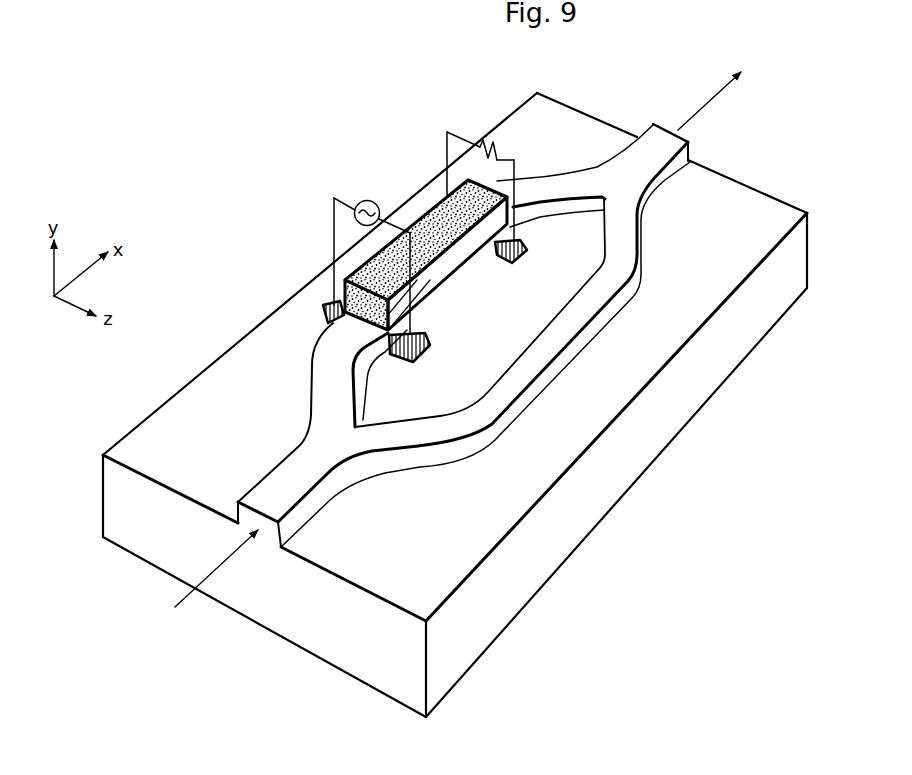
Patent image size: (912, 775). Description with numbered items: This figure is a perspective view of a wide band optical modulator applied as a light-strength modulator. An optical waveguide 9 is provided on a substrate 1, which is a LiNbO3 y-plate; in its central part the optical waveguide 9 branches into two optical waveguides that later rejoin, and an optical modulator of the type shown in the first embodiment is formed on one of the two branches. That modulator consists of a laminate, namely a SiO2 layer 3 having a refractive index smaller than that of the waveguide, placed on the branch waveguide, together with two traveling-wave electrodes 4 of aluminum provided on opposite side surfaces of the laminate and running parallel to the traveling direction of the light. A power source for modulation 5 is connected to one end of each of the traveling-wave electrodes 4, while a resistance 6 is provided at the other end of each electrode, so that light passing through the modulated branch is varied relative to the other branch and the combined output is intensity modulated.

The substrate 1 is at (567, 545).
The SiO2 layer 3 is at (446, 234).
The traveling-wave electrodes 4 is at (437, 201).
The power source for modulation 5 is at (358, 205).
The resistance 6 is at (491, 143).
The optical waveguide 9 is at (415, 442).